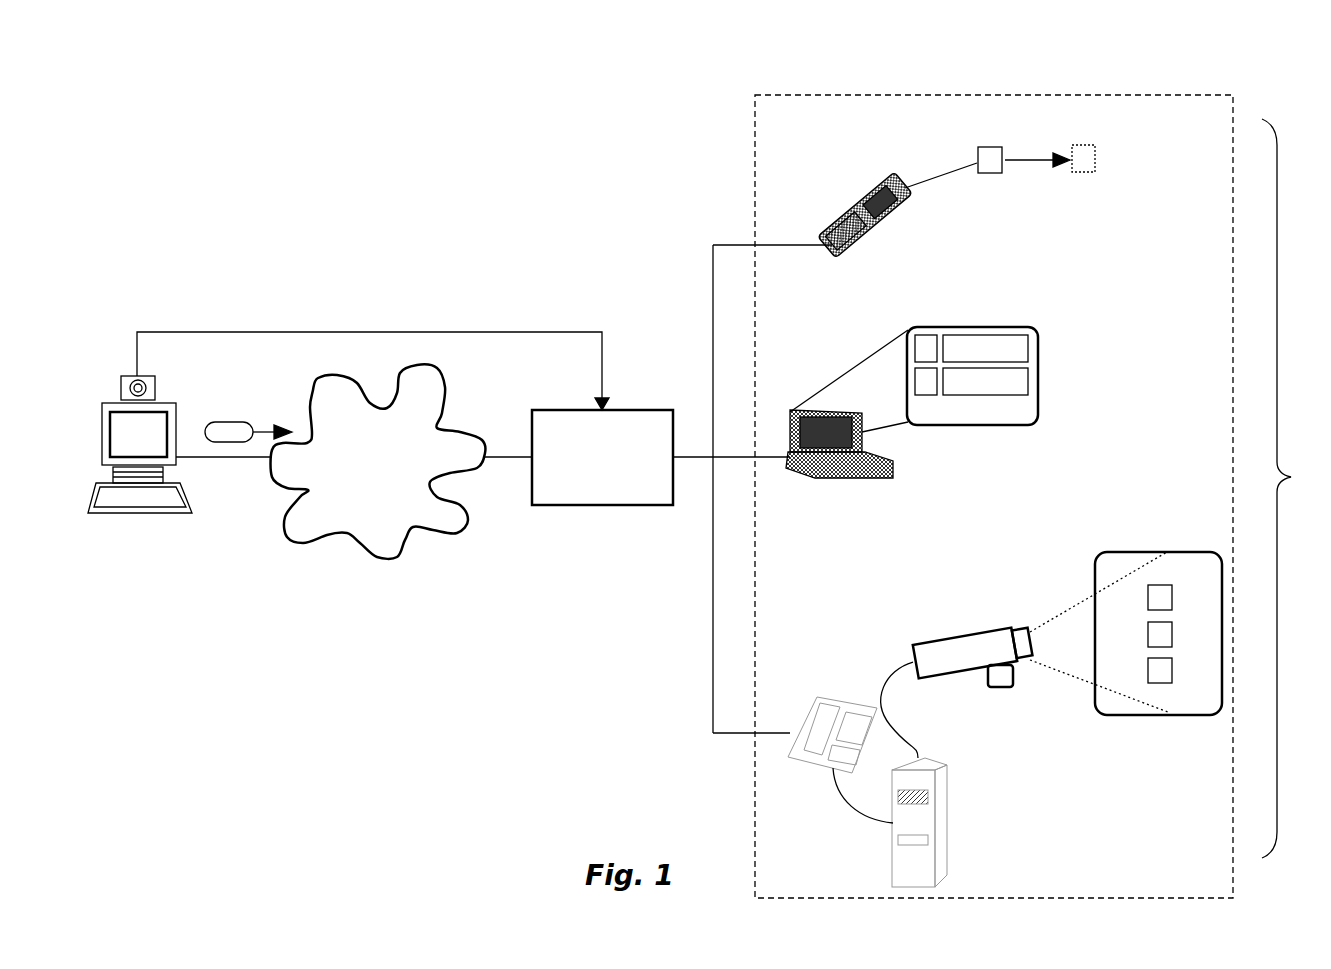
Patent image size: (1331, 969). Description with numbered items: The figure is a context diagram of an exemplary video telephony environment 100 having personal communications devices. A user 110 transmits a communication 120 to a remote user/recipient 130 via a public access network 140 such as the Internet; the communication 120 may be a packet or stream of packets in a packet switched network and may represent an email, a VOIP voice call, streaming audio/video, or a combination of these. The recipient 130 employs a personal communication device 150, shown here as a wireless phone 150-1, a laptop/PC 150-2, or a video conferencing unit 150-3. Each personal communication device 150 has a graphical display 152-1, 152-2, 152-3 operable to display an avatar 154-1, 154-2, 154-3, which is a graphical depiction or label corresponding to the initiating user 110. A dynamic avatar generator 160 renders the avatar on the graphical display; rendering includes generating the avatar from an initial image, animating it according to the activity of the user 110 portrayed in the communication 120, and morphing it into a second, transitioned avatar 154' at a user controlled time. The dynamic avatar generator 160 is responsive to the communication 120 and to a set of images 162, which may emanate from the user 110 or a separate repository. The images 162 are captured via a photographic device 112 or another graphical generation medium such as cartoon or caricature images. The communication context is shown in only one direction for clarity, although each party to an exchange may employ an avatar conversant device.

The video telephony environment 100 is at (113, 100).
The user 110 is at (103, 420).
The photographic device 112 is at (121, 378).
The communication 120 is at (240, 421).
The remote user/recipient 130 is at (1115, 95).
The public access network 140 is at (388, 560).
The personal communication device 150 is at (1294, 488).
The wireless phone 150-1 is at (835, 212).
The laptop/PC 150-2 is at (840, 478).
The video conferencing unit 150-3 is at (947, 823).
The graphical display 152-1 is at (870, 188).
The graphical display 152-2 is at (942, 425).
The graphical display 152-3 is at (1095, 572).
The avatar 154-1 is at (1000, 147).
The transitioned avatar 154' is at (1131, 147).
The avatar 154-2 is at (935, 335).
The avatar 154-3 is at (1170, 585).
The dynamic avatar generator 160 is at (565, 505).
The set of images 162 is at (468, 332).